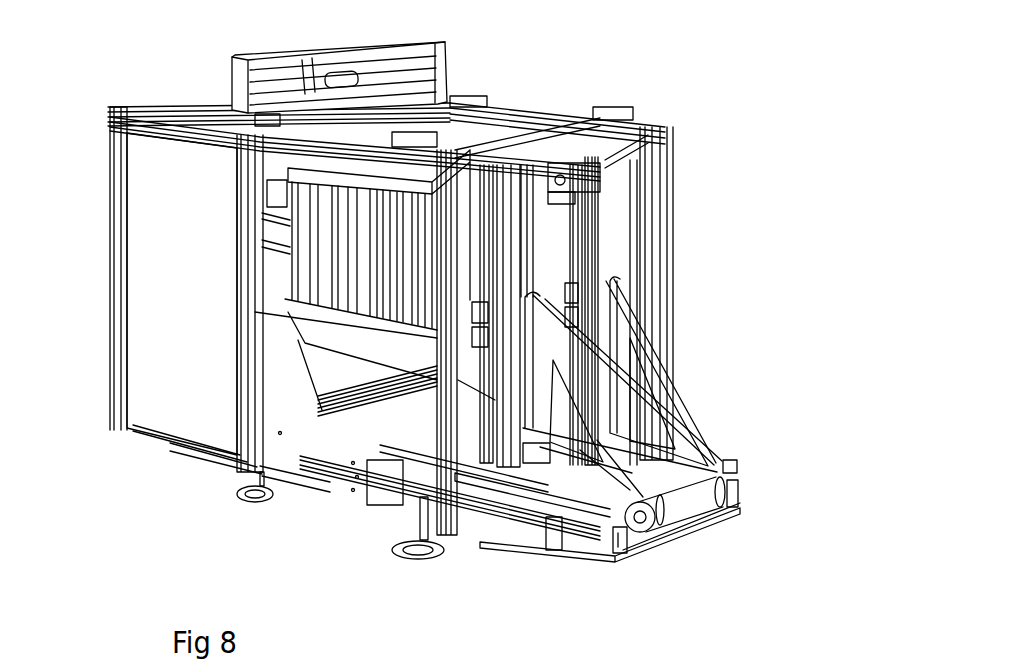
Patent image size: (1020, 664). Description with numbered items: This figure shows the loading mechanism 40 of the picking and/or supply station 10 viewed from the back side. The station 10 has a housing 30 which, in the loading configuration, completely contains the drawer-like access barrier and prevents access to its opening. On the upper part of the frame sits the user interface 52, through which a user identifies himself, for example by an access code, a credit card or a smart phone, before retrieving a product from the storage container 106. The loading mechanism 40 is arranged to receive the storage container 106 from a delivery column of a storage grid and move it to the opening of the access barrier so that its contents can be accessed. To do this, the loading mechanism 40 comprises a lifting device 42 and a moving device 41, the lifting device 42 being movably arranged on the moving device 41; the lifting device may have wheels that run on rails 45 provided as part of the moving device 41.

The station 10 is at (665, 72).
The housing 30 is at (157, 308).
The user interface 52 is at (423, 63).
The storage container 106 is at (350, 245).
The lifting device 42 is at (607, 270).
The loading mechanism 40 is at (680, 353).
The moving device 41 is at (503, 535).
The rails 45 is at (600, 540).